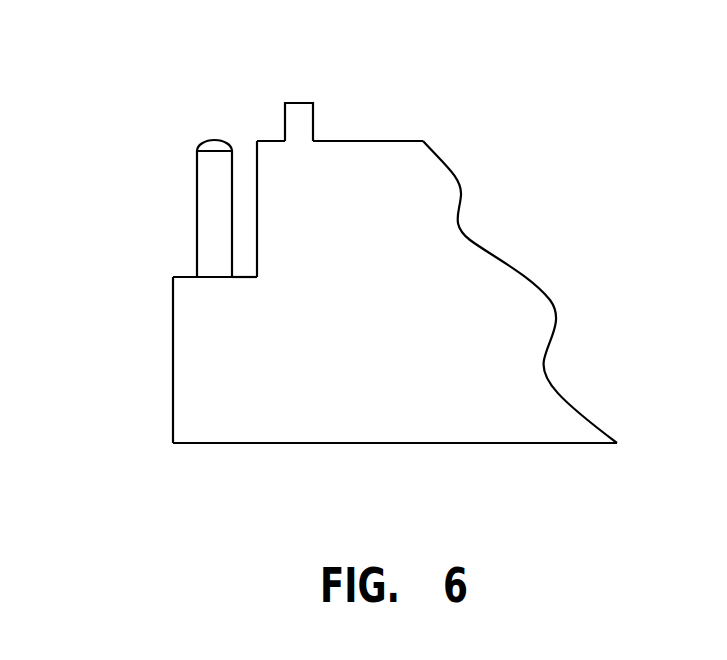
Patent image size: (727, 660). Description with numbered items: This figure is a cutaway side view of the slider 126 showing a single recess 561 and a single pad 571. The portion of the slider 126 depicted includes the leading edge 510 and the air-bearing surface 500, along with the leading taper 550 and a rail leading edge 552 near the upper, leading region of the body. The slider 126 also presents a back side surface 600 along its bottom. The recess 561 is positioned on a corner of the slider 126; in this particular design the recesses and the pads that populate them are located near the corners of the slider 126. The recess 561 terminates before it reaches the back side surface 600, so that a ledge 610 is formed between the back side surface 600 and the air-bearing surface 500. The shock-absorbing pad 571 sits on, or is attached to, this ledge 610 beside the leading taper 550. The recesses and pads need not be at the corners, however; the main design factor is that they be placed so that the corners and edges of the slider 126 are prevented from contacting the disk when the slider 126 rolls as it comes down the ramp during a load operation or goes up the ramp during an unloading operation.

The air-bearing surface 500 is at (406, 141).
The slider 126 is at (500, 277).
The back side surface 600 is at (500, 444).
The leading edge 510 is at (173, 321).
The ledge 610 is at (185, 277).
The leading taper 550 is at (267, 138).
The rail leading edge 552 is at (302, 102).
The recess 561 is at (257, 248).
The pad 571 is at (197, 192).